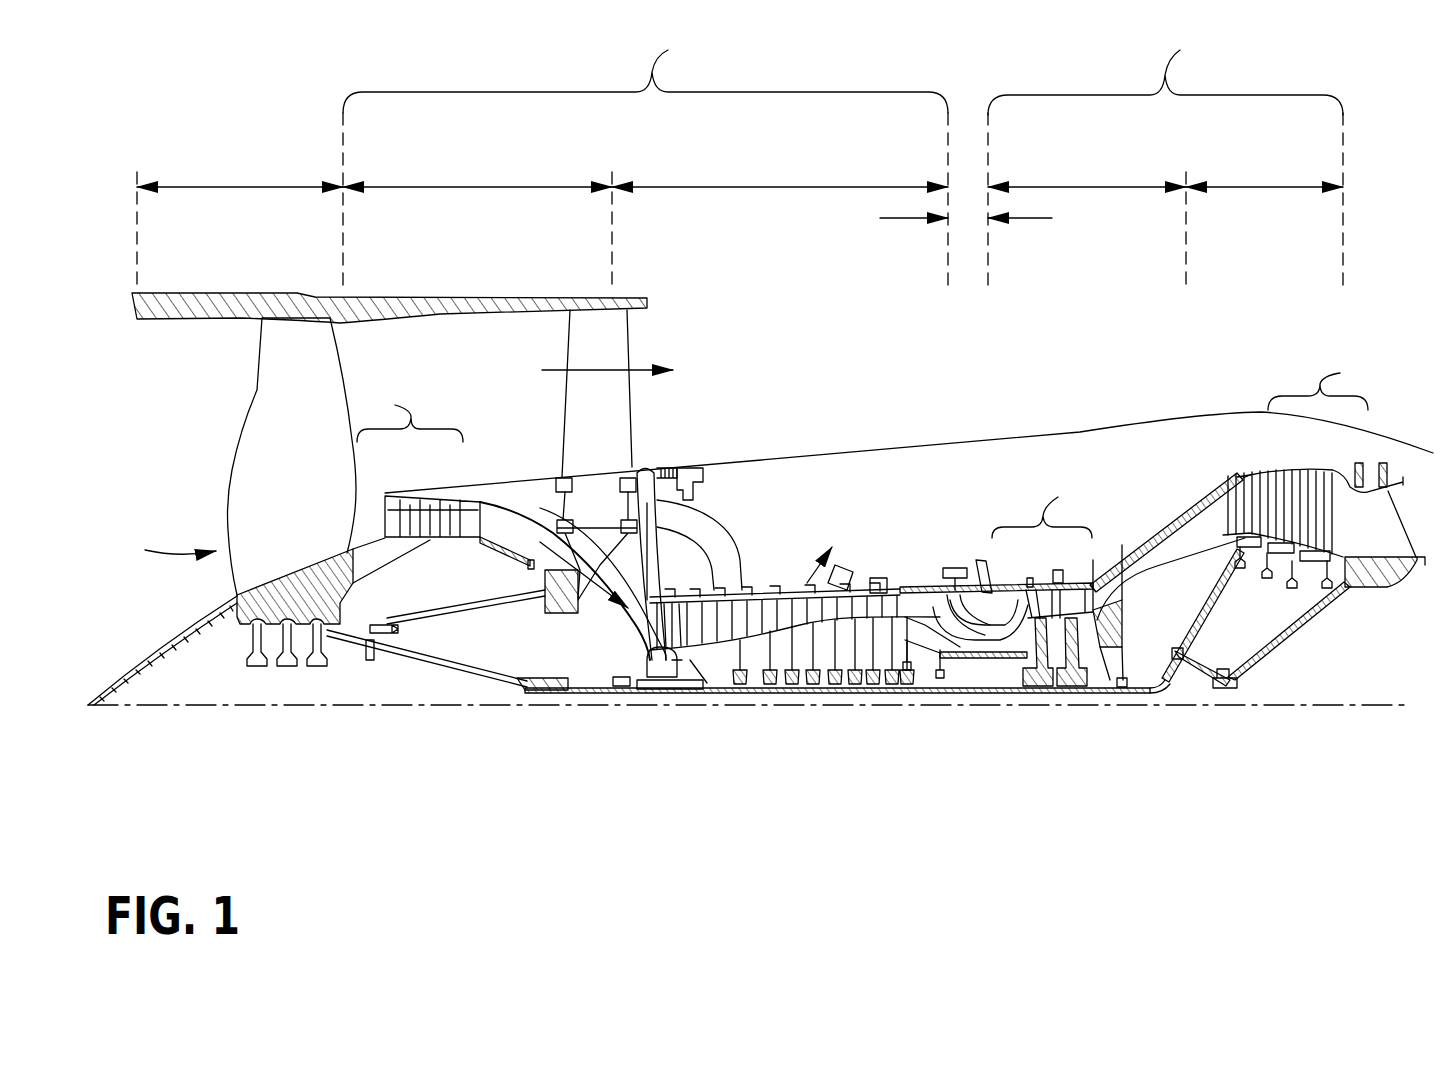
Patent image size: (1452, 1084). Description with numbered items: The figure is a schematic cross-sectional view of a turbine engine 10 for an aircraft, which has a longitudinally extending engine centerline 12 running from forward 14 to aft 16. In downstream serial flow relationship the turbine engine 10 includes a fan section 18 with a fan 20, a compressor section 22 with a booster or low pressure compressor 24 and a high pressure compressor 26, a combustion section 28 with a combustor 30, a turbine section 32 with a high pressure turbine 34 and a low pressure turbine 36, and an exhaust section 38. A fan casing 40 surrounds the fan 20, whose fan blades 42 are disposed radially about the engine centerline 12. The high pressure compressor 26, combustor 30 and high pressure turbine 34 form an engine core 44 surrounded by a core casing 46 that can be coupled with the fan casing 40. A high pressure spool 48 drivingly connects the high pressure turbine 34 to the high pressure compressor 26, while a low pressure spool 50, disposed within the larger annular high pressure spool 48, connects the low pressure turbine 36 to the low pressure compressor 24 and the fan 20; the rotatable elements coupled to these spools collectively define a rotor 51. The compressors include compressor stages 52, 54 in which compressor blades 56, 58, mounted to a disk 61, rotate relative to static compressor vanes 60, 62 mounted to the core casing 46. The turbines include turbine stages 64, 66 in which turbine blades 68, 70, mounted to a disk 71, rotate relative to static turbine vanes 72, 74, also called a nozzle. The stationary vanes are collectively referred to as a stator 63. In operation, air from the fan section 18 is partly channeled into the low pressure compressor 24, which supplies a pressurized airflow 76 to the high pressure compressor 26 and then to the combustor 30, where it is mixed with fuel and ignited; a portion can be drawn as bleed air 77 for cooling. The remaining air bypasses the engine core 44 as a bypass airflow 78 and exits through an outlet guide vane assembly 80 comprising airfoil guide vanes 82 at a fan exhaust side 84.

The turbine engine 10 is at (1357, 218).
The engine centerline 12 is at (220, 708).
The forward 14 is at (155, 417).
The aft 16 is at (1432, 513).
The fan section 18 is at (246, 187).
The fan 20 is at (165, 550).
The compressor section 22 is at (645, 75).
The low pressure compressor 24 is at (490, 187).
The high pressure compressor 26 is at (785, 187).
The combustion section 28 is at (897, 218).
The combustor 30 is at (990, 583).
The turbine section 32 is at (1165, 75).
The high pressure turbine 34 is at (1088, 187).
The low pressure turbine 36 is at (1262, 187).
The exhaust section 38 is at (1430, 462).
The fan casing 40 is at (385, 293).
The fan blades 42 is at (322, 350).
The engine core 44 is at (905, 470).
The core casing 46 is at (1172, 505).
The high pressure spool 48 is at (950, 660).
The low pressure spool 50 is at (543, 690).
The rotor 51 is at (812, 696).
The compressor stages 52 is at (410, 412).
The compressor stages 54 is at (800, 560).
The compressor blades 56 is at (440, 500).
The compressor blades 58 is at (700, 610).
The static compressor vanes 60 is at (405, 500).
The disk 61 is at (437, 540).
The static compressor vanes 62 is at (680, 600).
The stator 63 is at (1245, 470).
The turbine stages 64 is at (1042, 509).
The turbine stages 66 is at (1320, 384).
The turbine blades 68 is at (1058, 590).
The turbine blades 70 is at (1330, 475).
The disk 71 is at (1248, 562).
The static turbine vanes 72 is at (1035, 588).
The static turbine vanes 74 is at (1310, 490).
The pressurized airflow 76 is at (575, 605).
The bleed air 77 is at (805, 565).
The bypass airflow 78 is at (548, 370).
The outlet guide vane assembly 80 is at (640, 433).
The airfoil guide vanes 82 is at (572, 405).
The fan exhaust side 84 is at (647, 350).